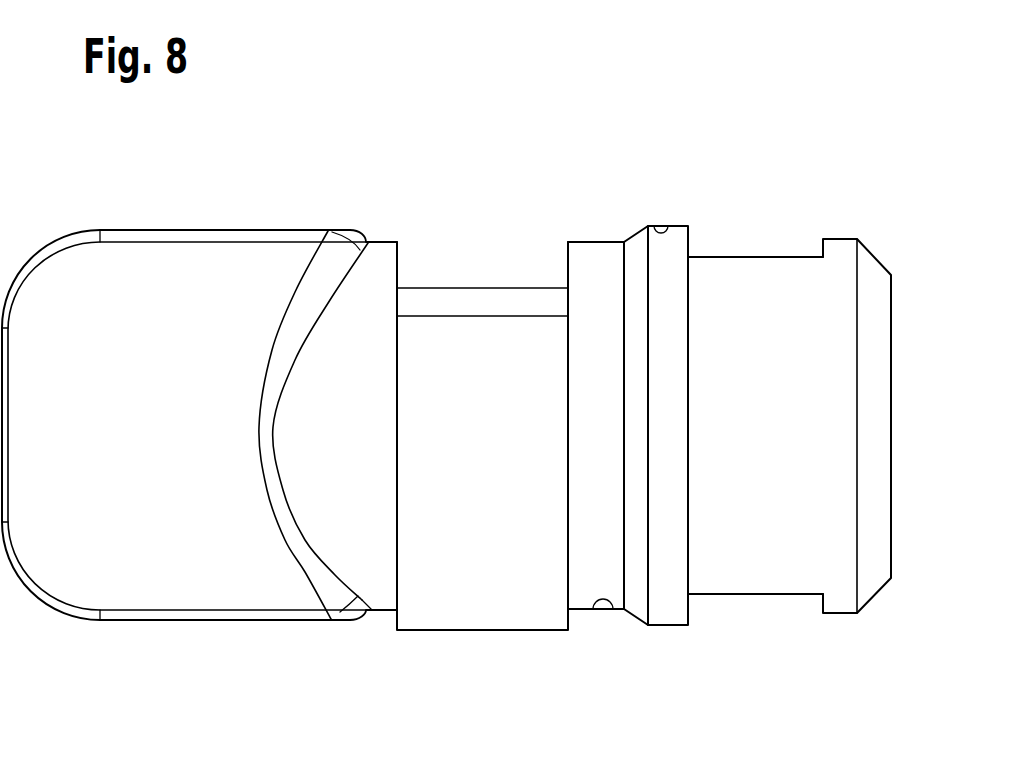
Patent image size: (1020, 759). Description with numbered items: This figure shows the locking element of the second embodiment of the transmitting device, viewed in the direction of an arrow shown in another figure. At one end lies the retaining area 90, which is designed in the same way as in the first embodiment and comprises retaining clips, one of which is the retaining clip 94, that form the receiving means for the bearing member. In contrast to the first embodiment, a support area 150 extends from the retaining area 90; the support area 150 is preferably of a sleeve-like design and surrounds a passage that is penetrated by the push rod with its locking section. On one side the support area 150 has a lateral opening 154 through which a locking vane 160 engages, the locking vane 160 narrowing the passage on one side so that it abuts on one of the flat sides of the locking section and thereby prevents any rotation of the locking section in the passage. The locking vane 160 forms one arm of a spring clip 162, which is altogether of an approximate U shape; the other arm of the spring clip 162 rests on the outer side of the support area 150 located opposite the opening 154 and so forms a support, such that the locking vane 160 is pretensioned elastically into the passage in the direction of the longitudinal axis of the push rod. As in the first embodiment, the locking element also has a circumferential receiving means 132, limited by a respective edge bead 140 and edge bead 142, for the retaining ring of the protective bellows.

The retaining area 90 is at (272, 632).
The retaining clip 94 is at (122, 480).
The circumferential receiving means 132 is at (756, 257).
The edge bead 140 is at (838, 257).
The edge bead 142 is at (665, 226).
The support area 150 is at (615, 609).
The lateral opening 154 is at (397, 268).
The locking vane 160 is at (468, 302).
The spring clip 162 is at (482, 492).